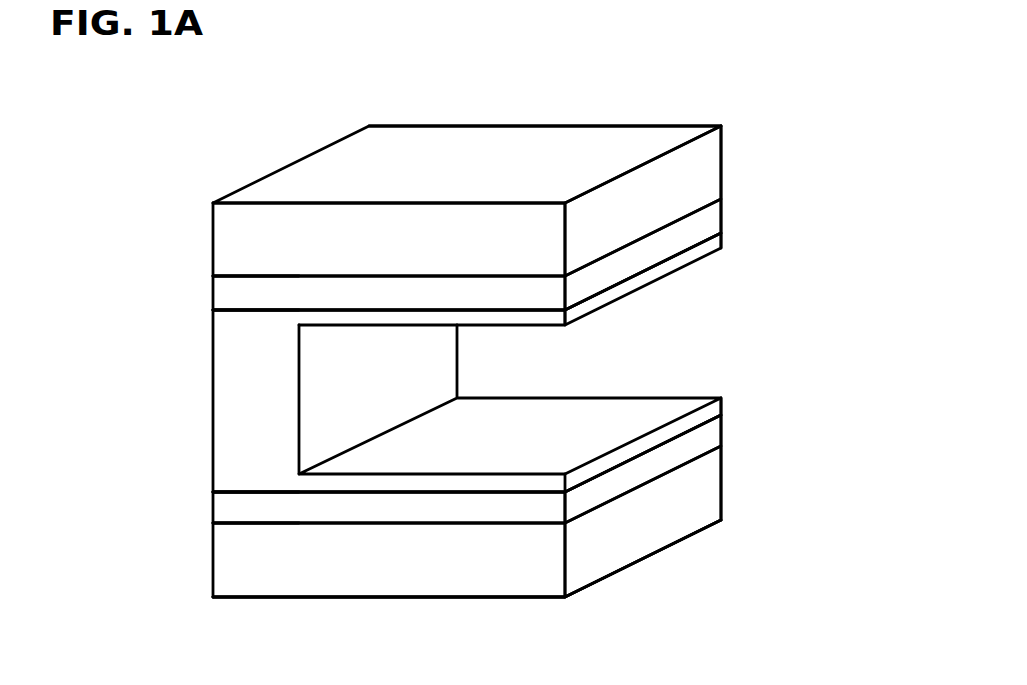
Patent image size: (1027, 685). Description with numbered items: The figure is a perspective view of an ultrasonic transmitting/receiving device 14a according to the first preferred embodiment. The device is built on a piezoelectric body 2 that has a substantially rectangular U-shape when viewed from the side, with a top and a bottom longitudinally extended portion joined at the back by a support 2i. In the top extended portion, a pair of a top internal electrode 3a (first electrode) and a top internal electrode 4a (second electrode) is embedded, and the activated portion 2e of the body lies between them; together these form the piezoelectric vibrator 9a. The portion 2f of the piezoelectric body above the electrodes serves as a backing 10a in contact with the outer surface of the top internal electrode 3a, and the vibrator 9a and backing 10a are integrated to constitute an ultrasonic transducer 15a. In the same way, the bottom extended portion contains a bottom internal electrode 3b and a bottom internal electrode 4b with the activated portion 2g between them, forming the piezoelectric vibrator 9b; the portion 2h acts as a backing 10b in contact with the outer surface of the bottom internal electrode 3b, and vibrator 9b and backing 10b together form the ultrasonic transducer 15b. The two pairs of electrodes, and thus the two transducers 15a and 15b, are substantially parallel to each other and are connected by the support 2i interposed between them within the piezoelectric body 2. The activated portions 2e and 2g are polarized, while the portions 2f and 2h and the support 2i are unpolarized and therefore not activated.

The ultrasonic transmitting/receiving device 14a is at (117, 150).
The piezoelectric body 2 is at (230, 245).
The support 2i is at (230, 397).
The activated portion 2e is at (712, 214).
The portion of the piezoelectric body 2f is at (708, 158).
The activated portion 2g is at (693, 440).
The portion of the piezoelectric body 2h is at (683, 523).
The top internal electrode 3a is at (683, 212).
The bottom internal electrode 3b is at (683, 457).
The top internal electrode 4a is at (683, 253).
The bottom internal electrode 4b is at (712, 420).
The piezoelectric vibrator 9a is at (880, 148).
The piezoelectric vibrator 9b is at (577, 489).
The backing 10a is at (563, 139).
The backing 10b is at (564, 558).
The ultrasonic transducer 15a is at (565, 123).
The ultrasonic transducer 15b is at (588, 587).